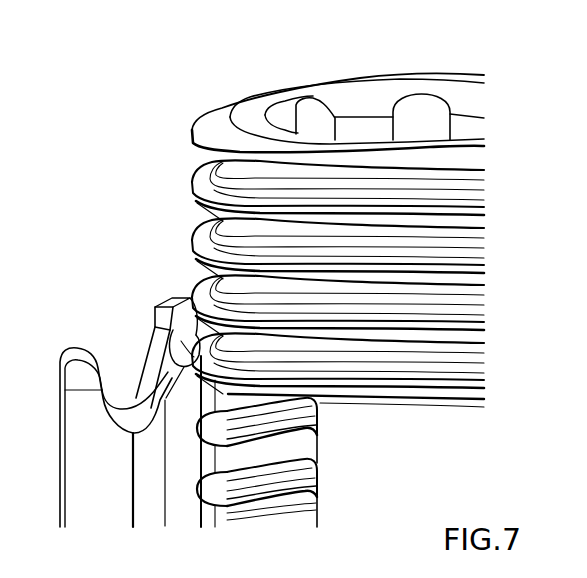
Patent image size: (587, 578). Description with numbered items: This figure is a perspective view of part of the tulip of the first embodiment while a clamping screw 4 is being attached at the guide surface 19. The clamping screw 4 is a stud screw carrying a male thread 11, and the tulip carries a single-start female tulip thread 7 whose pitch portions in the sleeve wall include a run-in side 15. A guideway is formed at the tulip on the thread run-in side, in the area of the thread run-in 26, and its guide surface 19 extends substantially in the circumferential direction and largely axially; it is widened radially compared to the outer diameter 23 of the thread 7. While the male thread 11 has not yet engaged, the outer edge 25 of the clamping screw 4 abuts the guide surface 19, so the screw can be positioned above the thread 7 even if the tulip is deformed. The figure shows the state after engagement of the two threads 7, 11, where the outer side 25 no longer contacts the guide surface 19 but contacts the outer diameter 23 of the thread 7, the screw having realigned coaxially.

The clamping screw 4 is at (252, 117).
The outer edge of the male thread 25 is at (187, 196).
The male thread 11 is at (271, 247).
The tulip thread 7 is at (318, 449).
The guide surface 19 is at (155, 302).
The thread run-in 26 is at (176, 382).
The run-in side 15 is at (182, 443).
The outer diameter of the thread 23 is at (198, 461).